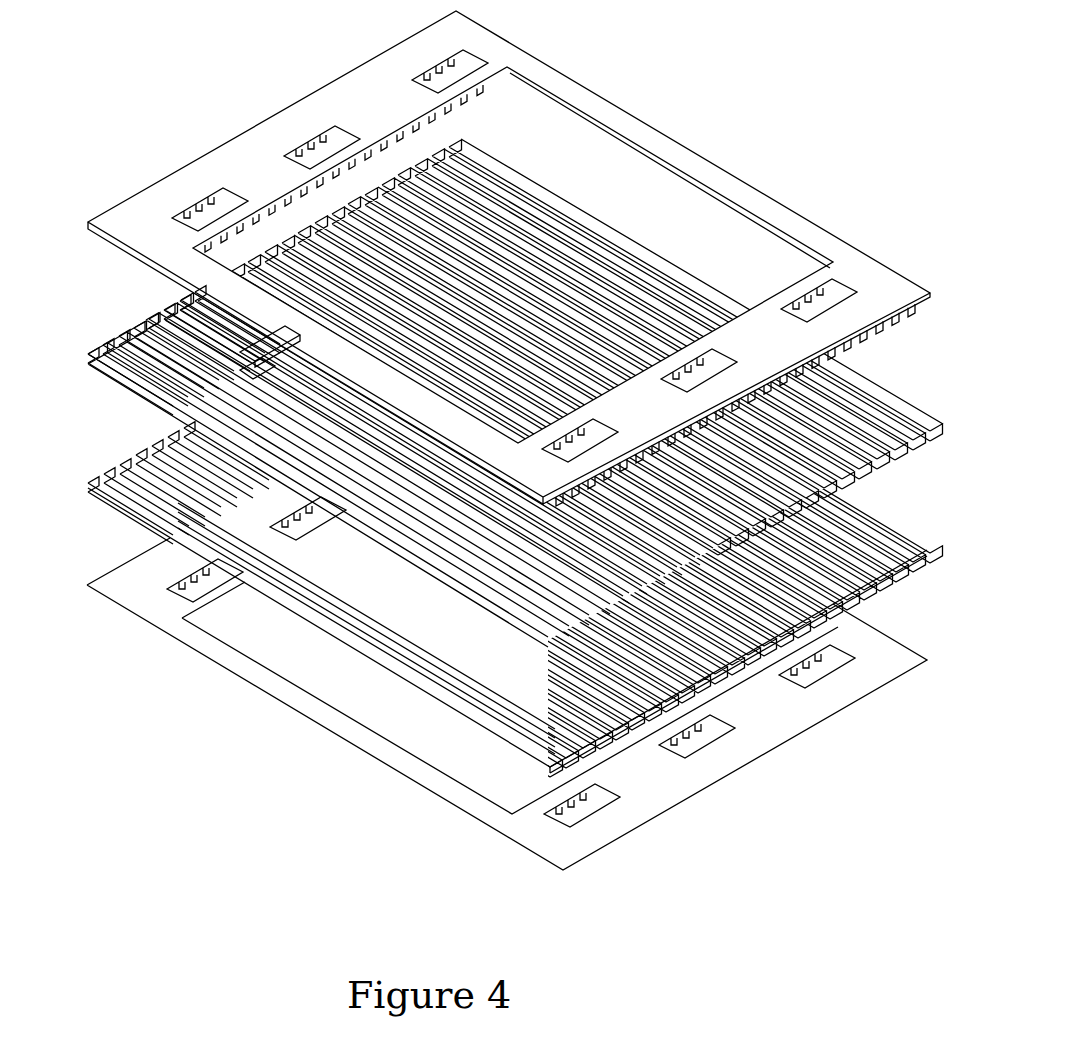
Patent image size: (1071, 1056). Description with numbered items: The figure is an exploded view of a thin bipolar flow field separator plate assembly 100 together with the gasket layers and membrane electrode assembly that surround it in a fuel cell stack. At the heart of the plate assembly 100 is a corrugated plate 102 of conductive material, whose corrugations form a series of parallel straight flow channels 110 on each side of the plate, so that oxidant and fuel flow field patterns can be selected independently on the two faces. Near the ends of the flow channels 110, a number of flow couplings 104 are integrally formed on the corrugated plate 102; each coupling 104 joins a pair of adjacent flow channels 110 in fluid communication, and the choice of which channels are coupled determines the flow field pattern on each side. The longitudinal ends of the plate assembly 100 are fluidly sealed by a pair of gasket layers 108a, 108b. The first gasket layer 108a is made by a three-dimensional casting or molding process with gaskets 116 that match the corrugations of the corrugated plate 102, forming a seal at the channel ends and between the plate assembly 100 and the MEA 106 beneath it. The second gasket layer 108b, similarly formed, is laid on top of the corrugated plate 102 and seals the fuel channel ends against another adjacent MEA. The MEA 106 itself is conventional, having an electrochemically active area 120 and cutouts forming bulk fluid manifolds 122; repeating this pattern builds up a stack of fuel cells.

The flow field plate assembly 100 is at (115, 320).
The corrugated plate 102 is at (485, 608).
The flow coupling 104 is at (273, 368).
The MEA 106 is at (376, 770).
The first gasket layer 108a is at (453, 715).
The second gasket layer 108b is at (544, 493).
The flow channel 110 is at (920, 440).
The gasket 116 is at (905, 320).
The electrochemically active area 120 is at (308, 672).
The bulk fluid manifold 122 is at (585, 812).